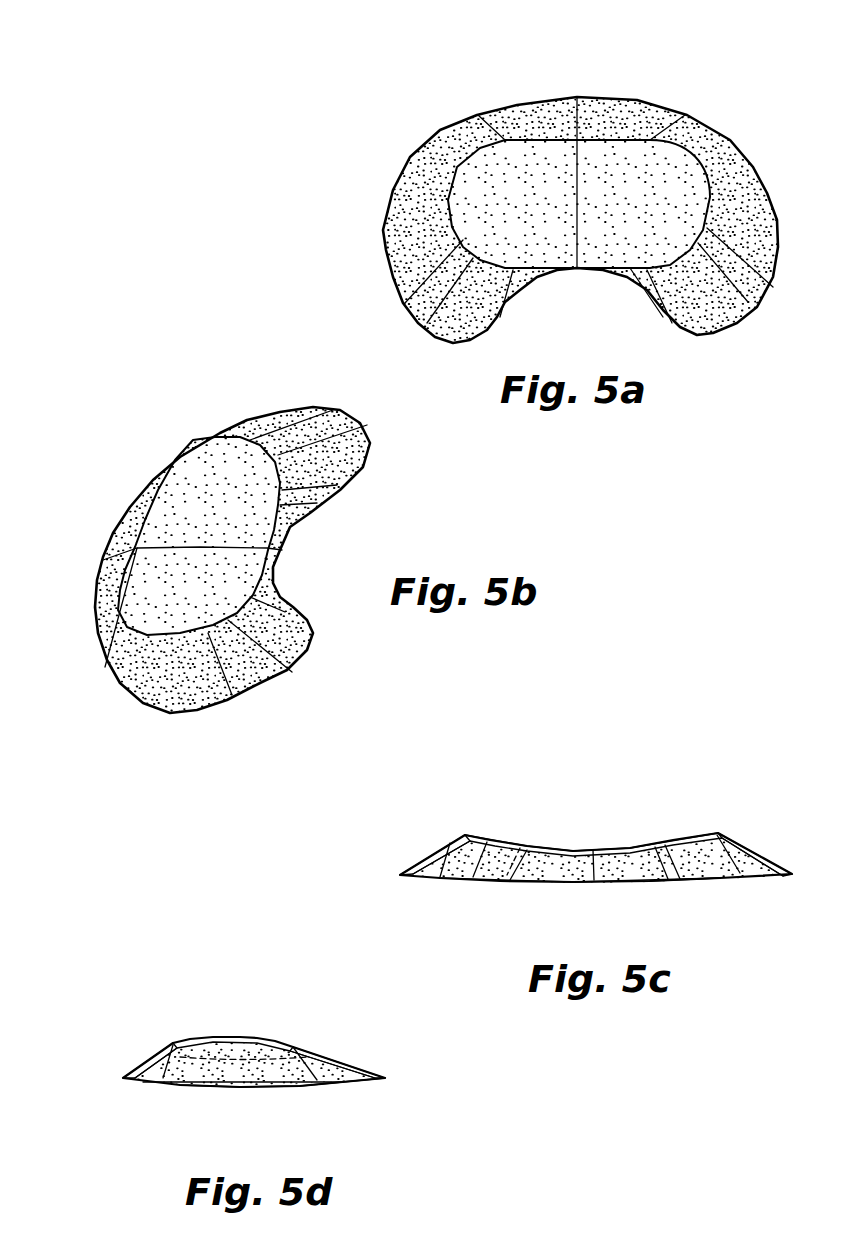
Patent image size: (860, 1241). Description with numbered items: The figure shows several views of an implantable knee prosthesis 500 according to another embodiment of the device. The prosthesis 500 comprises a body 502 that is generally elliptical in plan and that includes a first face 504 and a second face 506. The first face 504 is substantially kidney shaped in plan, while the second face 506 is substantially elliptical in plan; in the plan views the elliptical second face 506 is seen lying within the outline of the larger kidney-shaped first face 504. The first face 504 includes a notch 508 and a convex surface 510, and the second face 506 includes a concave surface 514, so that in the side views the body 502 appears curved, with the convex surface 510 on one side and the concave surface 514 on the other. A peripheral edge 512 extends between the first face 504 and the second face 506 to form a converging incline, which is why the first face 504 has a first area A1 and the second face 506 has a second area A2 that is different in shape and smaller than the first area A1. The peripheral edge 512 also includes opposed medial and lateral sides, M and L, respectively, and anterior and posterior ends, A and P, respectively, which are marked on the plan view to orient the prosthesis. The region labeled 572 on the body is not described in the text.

In FIG. 5A, the implantable knee prosthesis 500 is at (708, 88).
In FIG. 5B, the implantable knee prosthesis 500 is at (118, 445).
In FIG. 5C, the implantable knee prosthesis 500 is at (723, 800).
In FIG. 5D, the implantable knee prosthesis 500 is at (190, 1013).
In FIG. 5A, the body 502 is at (750, 152).
In FIG. 5B, the body 502 is at (305, 405).
In FIG. 5C, the body 502 is at (462, 833).
In FIG. 5D, the body 502 is at (303, 1043).
In FIG. 5A, the first face 504 is at (410, 232).
In FIG. 5B, the first face 504 is at (195, 700).
In FIG. 5C, the first face 504 is at (715, 882).
In FIG. 5D, the first face 504 is at (317, 1087).
In FIG. 5A, the second face 506 is at (480, 170).
In FIG. 5B, the second face 506 is at (205, 452).
In FIG. 5A, the notch 508 is at (625, 290).
In FIG. 5B, the notch 508 is at (283, 527).
In FIG. 5C, the convex surface 510 is at (543, 883).
In FIG. 5D, the convex surface 510 is at (243, 1087).
In FIG. 5B, the peripheral edge 512 is at (305, 647).
In FIG. 5C, the peripheral edge 512 is at (437, 848).
In FIG. 5D, the peripheral edge 512 is at (153, 1060).
In FIG. 5C, the concave surface 514 is at (577, 852).
In FIG. 5D, the concave surface 514 is at (253, 1050).
In FIG. 5A, the lobe region 572 is at (720, 312).
In FIG. 5A, the first area A1 is at (525, 95).
In FIG. 5A, the second area A2 is at (618, 138).
In FIG. 5B, the anterior end A is at (327, 450).
In FIG. 5B, the medial side M is at (100, 583).
In FIG. 5B, the lateral side L is at (280, 597).
In FIG. 5B, the posterior end P is at (231, 697).